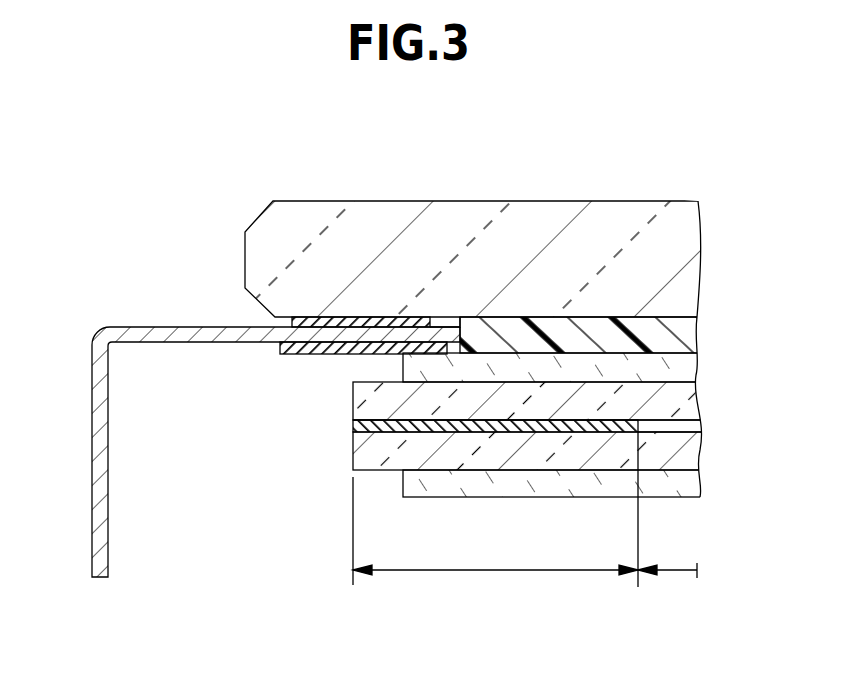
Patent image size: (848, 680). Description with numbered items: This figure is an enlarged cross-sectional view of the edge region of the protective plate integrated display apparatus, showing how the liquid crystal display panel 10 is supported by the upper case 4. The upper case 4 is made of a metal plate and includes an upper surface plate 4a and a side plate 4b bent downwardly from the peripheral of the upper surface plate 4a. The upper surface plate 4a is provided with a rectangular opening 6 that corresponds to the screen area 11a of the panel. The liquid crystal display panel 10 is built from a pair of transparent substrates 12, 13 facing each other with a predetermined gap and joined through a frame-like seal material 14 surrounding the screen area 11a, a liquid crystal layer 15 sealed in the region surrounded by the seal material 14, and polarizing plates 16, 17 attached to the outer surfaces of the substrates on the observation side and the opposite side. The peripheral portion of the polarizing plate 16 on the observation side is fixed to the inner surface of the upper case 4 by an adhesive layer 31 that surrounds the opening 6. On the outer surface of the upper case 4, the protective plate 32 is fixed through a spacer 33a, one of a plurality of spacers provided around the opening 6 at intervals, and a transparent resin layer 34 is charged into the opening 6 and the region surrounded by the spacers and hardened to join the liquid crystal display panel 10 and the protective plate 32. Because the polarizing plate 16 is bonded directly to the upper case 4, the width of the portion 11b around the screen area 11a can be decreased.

The upper case 4 is at (241, 401).
The upper surface plate 4a is at (186, 326).
The side plate 4b is at (100, 460).
The opening 6 is at (462, 333).
The liquid crystal display panel 10 is at (512, 428).
The screen area 11a is at (677, 573).
The portion around the screen area 11b is at (488, 573).
The transparent substrate 12 is at (670, 400).
The transparent substrate 13 is at (670, 455).
The seal material 14 is at (488, 428).
The liquid crystal layer 15 is at (678, 426).
The polarizing plate 16 is at (670, 372).
The polarizing plate 17 is at (672, 486).
The adhesive layer 31 is at (322, 356).
The protective plate 32 is at (655, 233).
The spacer 33a is at (311, 322).
The transparent resin layer 34 is at (555, 333).